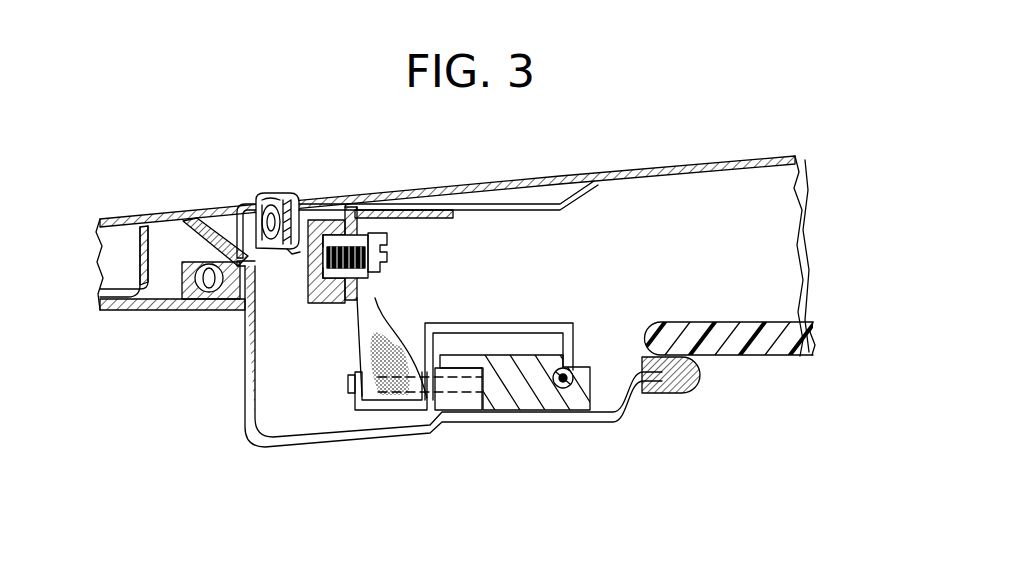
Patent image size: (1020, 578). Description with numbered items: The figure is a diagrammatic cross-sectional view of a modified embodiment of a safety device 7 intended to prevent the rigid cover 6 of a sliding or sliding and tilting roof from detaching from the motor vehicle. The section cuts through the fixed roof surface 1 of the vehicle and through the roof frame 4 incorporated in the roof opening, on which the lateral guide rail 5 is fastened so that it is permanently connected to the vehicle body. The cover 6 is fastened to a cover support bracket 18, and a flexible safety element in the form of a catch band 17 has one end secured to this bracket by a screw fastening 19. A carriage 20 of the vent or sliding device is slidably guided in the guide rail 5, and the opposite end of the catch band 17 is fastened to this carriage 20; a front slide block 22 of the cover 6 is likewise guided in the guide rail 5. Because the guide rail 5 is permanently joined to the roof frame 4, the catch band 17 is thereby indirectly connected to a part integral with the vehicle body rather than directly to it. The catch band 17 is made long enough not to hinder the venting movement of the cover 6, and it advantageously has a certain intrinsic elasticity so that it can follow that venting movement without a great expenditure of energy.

The fixed roof surface 1 is at (161, 216).
The roof frame 4 is at (298, 441).
The guide rail 5 is at (528, 388).
The cover 6 is at (592, 176).
The safety device 7 is at (424, 304).
The catch band 17 is at (368, 351).
The cover support bracket 18 is at (413, 210).
The screw fastening 19 is at (380, 243).
The carriage 20 is at (400, 409).
The front slide block 22 is at (463, 401).